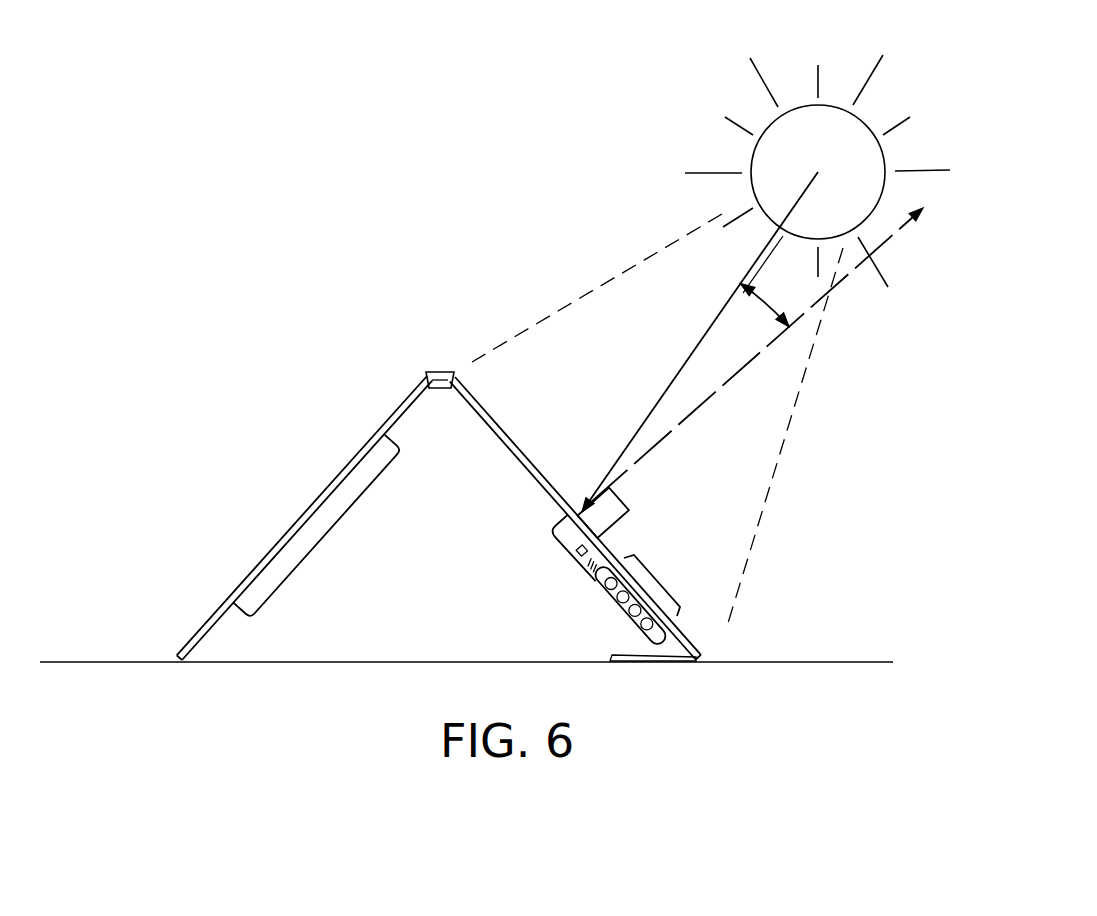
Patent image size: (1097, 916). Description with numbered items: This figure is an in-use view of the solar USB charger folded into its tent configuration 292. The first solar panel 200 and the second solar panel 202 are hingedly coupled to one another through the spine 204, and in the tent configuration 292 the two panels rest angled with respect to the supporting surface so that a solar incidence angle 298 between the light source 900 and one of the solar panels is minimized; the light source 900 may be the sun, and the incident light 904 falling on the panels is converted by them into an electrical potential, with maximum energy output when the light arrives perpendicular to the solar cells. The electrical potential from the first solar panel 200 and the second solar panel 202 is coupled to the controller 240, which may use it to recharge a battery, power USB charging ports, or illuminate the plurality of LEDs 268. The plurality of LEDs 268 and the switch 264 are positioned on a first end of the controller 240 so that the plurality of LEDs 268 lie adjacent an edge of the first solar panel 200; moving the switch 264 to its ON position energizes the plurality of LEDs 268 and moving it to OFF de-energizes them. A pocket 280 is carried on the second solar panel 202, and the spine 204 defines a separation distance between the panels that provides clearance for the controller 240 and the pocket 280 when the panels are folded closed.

The light source 900 is at (873, 117).
The incident light 904 is at (697, 345).
The solar incidence angle 298 is at (772, 298).
The spine 204 is at (443, 372).
The second solar panel 202 is at (393, 410).
The pocket 280 is at (333, 530).
The first solar panel 200 is at (547, 490).
The controller 240 is at (562, 545).
The switch 264 is at (577, 572).
The plurality of LEDs 268 is at (662, 582).
The tent configuration 292 is at (215, 471).